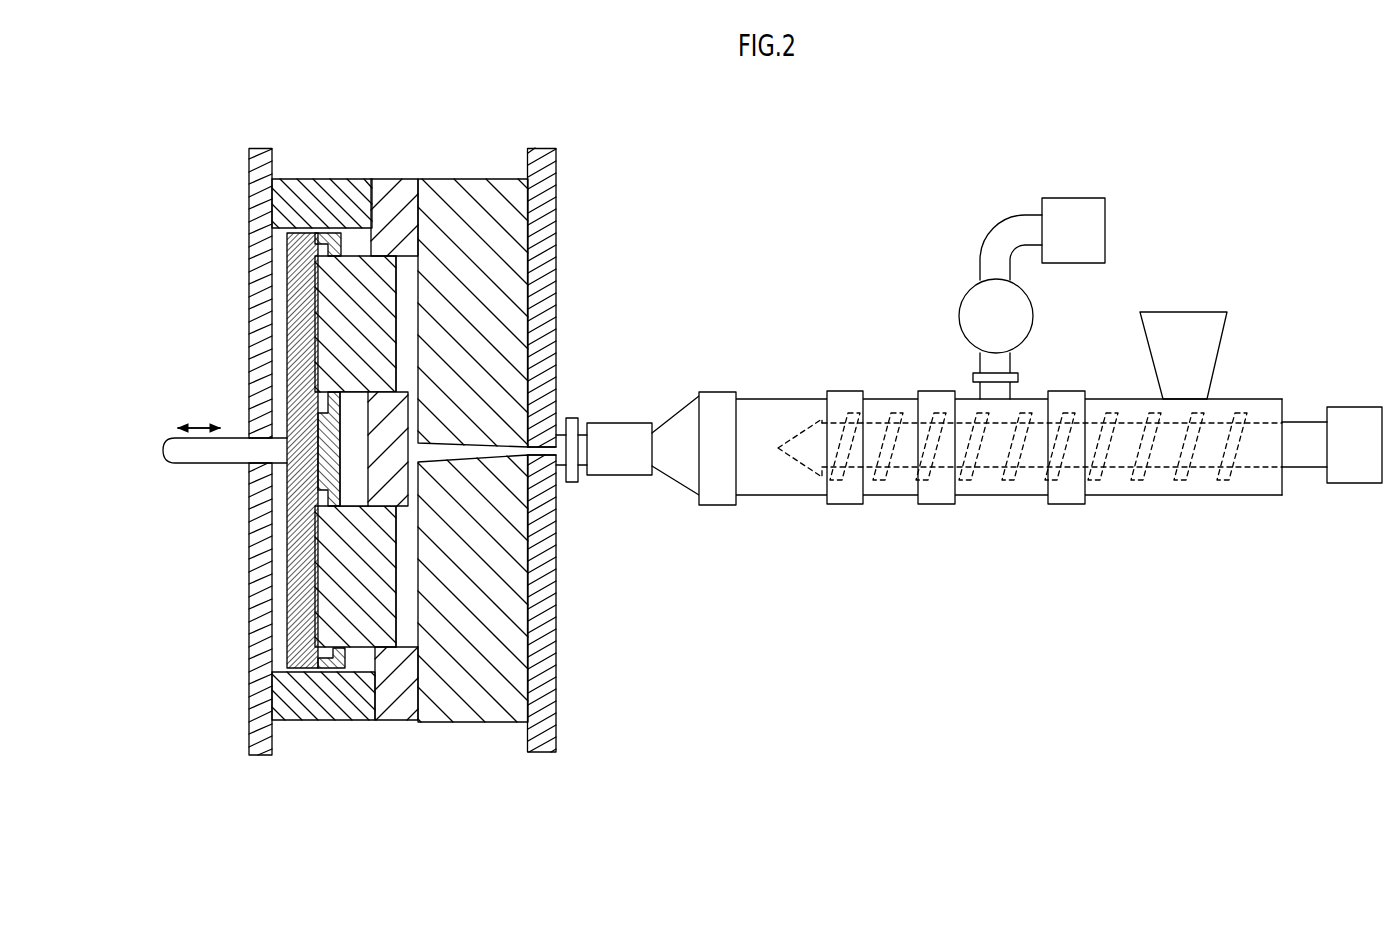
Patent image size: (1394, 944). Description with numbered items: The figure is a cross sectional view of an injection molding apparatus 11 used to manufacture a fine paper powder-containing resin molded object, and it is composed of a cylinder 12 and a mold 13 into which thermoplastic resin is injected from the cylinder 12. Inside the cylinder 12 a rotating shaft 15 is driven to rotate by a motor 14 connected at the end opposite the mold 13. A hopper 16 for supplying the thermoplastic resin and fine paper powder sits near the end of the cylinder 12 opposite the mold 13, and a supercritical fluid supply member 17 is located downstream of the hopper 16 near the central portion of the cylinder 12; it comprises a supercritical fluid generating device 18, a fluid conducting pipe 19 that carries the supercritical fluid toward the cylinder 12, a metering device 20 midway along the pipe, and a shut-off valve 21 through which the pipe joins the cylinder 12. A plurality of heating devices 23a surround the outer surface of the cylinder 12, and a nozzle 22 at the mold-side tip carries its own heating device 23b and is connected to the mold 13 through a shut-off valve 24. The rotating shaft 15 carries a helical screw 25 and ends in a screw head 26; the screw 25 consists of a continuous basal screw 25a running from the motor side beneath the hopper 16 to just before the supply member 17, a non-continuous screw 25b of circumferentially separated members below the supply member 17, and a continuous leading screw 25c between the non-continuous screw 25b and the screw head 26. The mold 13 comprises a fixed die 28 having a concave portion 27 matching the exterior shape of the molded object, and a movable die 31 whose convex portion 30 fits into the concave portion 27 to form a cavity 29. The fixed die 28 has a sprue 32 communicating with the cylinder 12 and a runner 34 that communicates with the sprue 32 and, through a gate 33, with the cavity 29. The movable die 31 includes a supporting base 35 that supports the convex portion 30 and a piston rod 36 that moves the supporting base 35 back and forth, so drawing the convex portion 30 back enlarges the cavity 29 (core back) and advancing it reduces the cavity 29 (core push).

The injection molding apparatus 11 is at (1153, 138).
The cylinder 12 is at (498, 140).
The mold 13 is at (372, 795).
The motor 14 is at (1352, 407).
The rotating shaft 15 is at (1262, 420).
The hopper 16 is at (1228, 325).
The supercritical fluid supply member 17 is at (981, 220).
The supercritical fluid generating device 18 is at (1070, 198).
The fluid conducting pipe 19 is at (1003, 215).
The metering device 20 is at (1033, 316).
The shut-off valve 21 is at (975, 375).
The nozzle 22 is at (582, 486).
The heating devices 23a is at (714, 392).
The heating device 23b is at (641, 423).
The shut-off valve 24 is at (578, 415).
The helical screw 25 is at (1125, 533).
The continuous basal screw 25a is at (1140, 460).
The non-continuous screw 25b is at (1018, 470).
The continuous leading screw 25c is at (897, 473).
The screw head 26 is at (793, 460).
The concave portion 27 is at (412, 630).
The fixed die 28 is at (500, 722).
The cavity 29 is at (402, 617).
The convex portion 30 is at (355, 650).
The movable die 31 is at (298, 722).
The sprue 32 is at (472, 443).
The gate 33 is at (483, 557).
The runner 34 is at (423, 472).
The supporting base 35 is at (288, 608).
The piston rod 36 is at (222, 465).